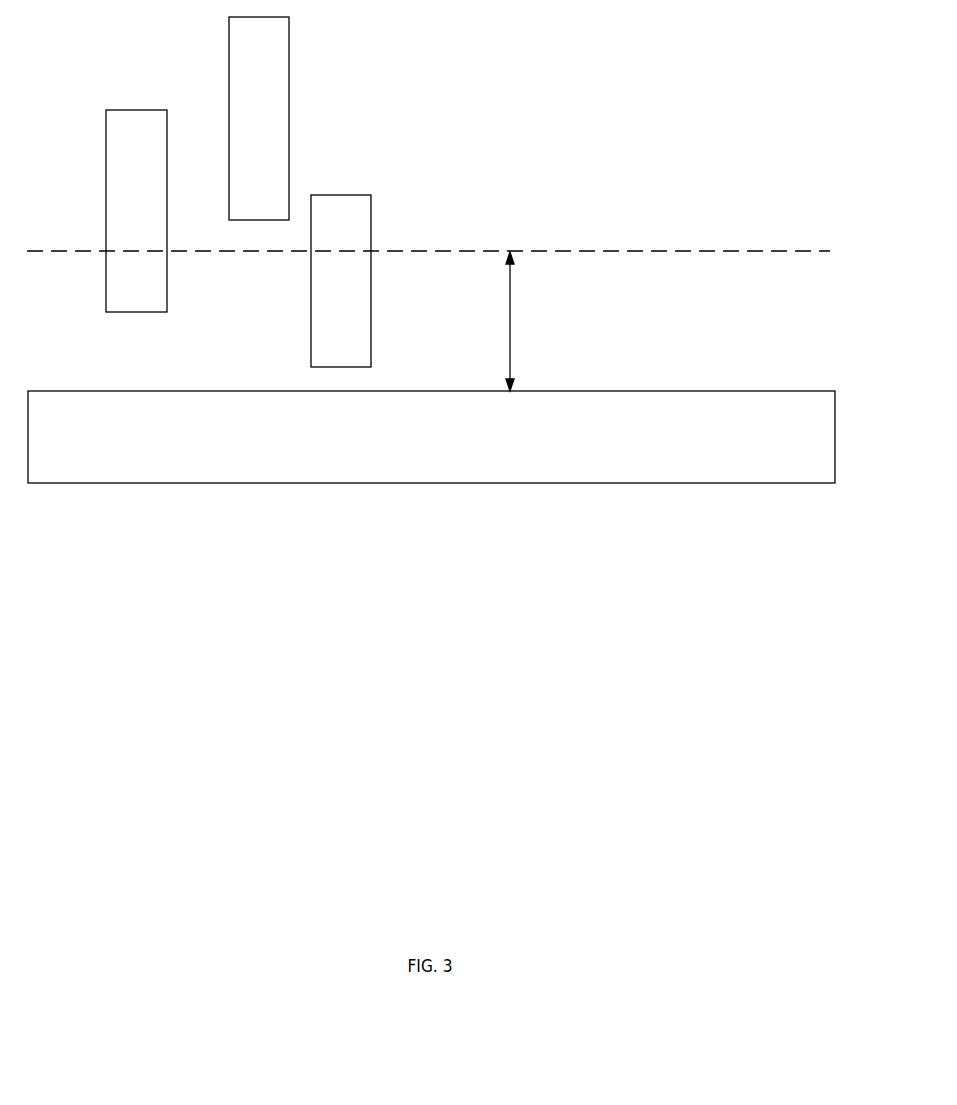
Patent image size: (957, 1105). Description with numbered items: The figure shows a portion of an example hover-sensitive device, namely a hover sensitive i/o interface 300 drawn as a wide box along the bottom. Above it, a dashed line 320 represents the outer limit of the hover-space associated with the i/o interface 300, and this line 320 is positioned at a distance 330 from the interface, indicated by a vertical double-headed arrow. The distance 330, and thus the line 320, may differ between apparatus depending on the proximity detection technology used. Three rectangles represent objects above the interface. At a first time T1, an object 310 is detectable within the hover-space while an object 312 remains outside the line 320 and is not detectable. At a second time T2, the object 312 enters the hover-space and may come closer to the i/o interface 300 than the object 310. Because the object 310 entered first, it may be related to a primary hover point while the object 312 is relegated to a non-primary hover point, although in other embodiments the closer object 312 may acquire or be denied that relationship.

The hover sensitive i/o interface 300 is at (414, 460).
The object 310 is at (118, 222).
The object 312 is at (335, 192).
The line 320 is at (644, 237).
The distance 330 is at (527, 342).
The first time T1 is at (305, 110).
The second time T2 is at (386, 329).